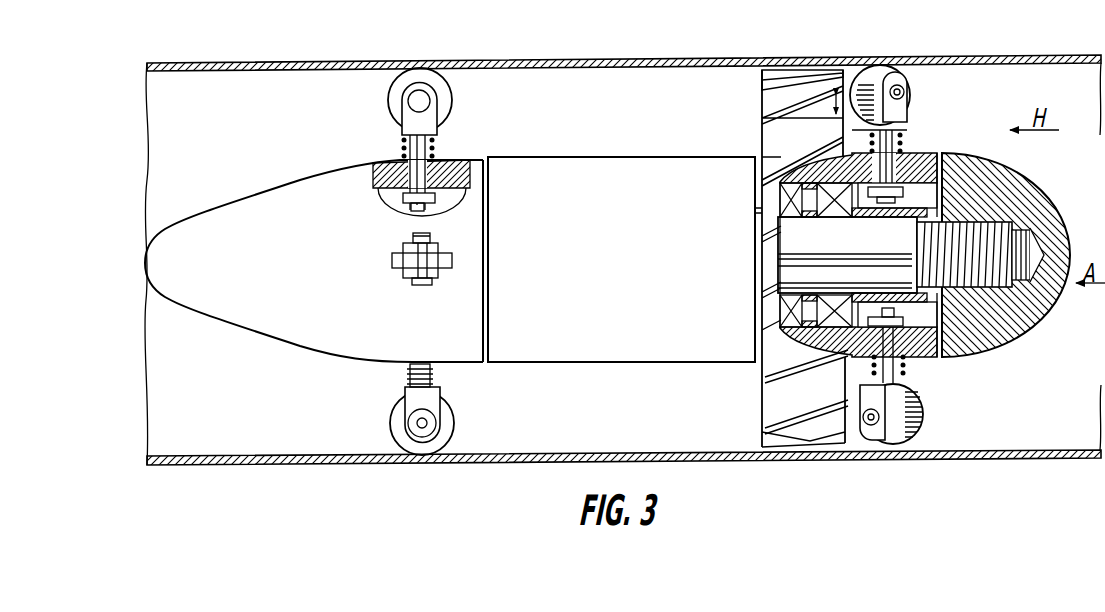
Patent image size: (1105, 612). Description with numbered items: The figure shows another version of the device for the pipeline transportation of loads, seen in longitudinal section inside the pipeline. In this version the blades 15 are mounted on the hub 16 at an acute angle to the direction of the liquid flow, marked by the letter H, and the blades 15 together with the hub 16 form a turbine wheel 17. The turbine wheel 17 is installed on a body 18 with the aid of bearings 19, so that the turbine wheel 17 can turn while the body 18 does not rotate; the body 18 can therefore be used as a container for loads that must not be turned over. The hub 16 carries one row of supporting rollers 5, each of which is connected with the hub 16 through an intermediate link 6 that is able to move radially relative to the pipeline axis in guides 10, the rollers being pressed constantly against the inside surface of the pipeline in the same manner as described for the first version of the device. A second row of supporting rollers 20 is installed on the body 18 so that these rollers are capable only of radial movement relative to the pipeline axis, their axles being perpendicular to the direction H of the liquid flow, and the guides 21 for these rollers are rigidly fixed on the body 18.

The supporting roller 5 is at (862, 82).
The intermediate link 6 is at (884, 146).
The guides 10 is at (908, 156).
The blades 15 is at (773, 136).
The hub 16 is at (829, 336).
The turbine wheel 17 is at (795, 72).
The body 18 is at (510, 170).
The bearings 19 is at (838, 333).
The supporting rollers 20 is at (394, 93).
The guides 21 is at (401, 161).